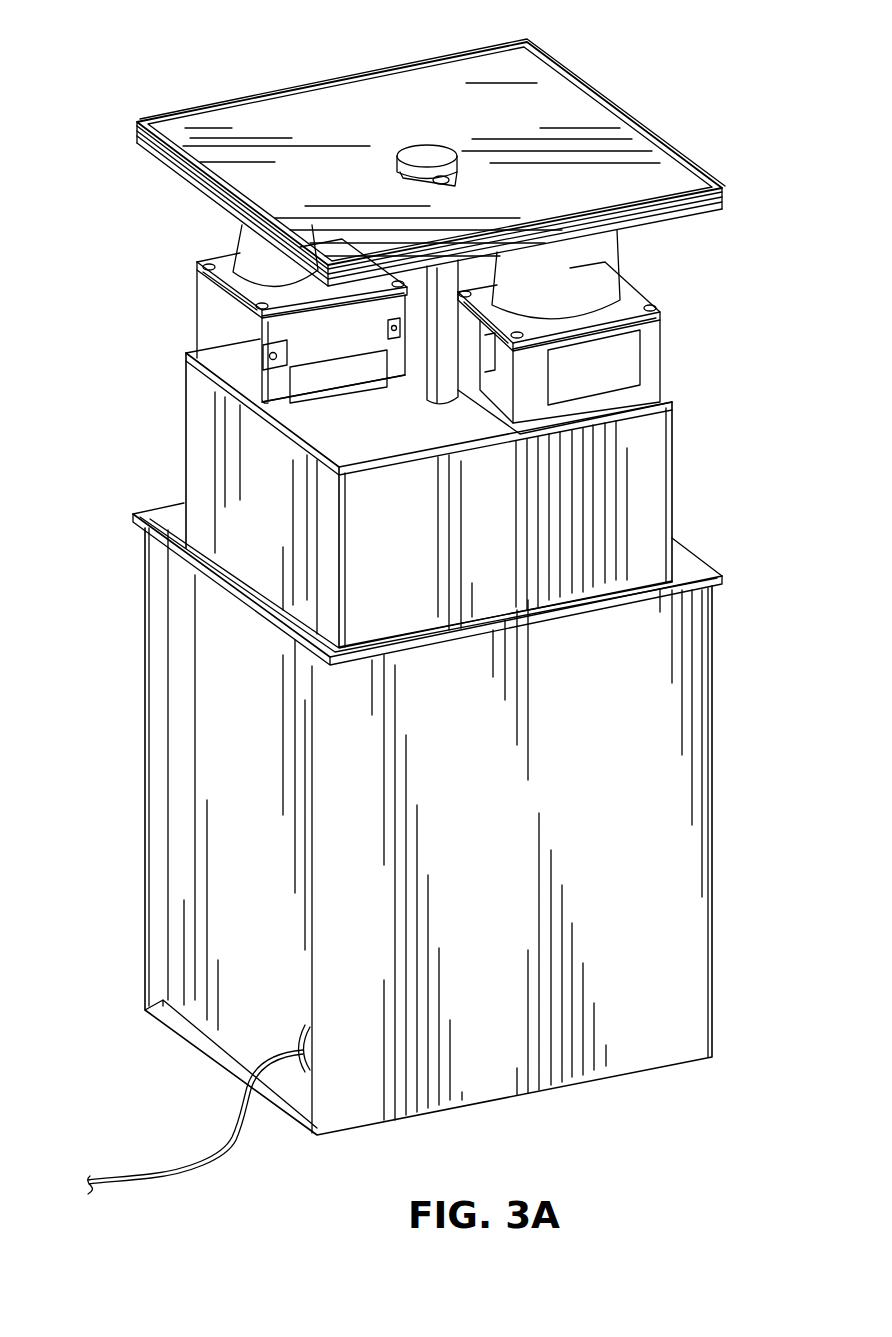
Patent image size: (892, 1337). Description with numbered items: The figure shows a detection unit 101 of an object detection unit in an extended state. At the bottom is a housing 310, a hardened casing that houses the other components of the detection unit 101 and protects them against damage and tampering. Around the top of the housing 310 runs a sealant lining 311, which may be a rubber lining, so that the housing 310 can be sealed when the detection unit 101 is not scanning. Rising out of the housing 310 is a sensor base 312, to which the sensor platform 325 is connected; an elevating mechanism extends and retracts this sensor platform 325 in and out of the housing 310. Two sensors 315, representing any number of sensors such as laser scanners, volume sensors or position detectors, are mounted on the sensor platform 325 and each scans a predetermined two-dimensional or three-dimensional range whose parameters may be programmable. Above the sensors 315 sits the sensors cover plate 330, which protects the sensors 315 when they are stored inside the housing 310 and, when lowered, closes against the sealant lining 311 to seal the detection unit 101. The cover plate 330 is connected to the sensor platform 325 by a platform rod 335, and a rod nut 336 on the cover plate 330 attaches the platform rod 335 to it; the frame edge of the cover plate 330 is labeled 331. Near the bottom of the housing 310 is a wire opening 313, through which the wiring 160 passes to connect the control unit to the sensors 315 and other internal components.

The detection unit 101 is at (219, 72).
The wiring 160 is at (196, 1157).
The housing 310 is at (178, 853).
The sealant lining 311 is at (565, 606).
The sensor base 312 is at (660, 505).
The wire opening 313 is at (300, 1024).
The sensors 315 is at (222, 318).
The sensor platform 325 is at (355, 433).
The sensors cover plate 330 is at (558, 108).
The cover frame 331 is at (332, 93).
The platform rods 335 is at (437, 396).
The rod nut 336 is at (430, 150).